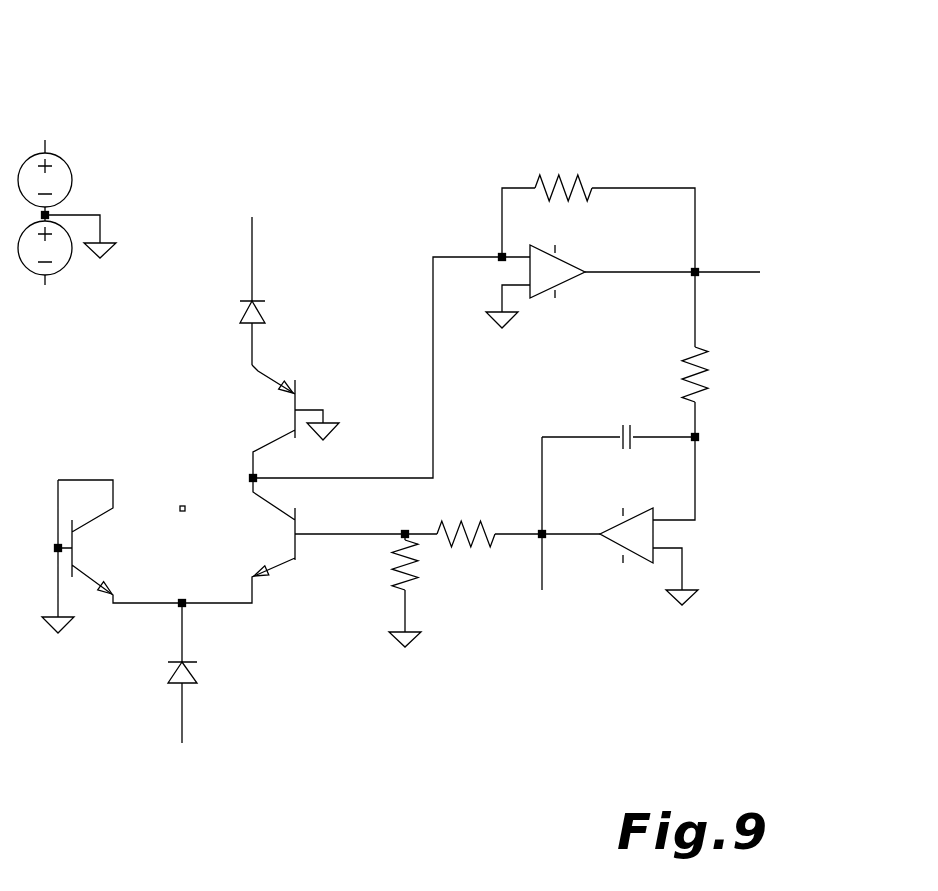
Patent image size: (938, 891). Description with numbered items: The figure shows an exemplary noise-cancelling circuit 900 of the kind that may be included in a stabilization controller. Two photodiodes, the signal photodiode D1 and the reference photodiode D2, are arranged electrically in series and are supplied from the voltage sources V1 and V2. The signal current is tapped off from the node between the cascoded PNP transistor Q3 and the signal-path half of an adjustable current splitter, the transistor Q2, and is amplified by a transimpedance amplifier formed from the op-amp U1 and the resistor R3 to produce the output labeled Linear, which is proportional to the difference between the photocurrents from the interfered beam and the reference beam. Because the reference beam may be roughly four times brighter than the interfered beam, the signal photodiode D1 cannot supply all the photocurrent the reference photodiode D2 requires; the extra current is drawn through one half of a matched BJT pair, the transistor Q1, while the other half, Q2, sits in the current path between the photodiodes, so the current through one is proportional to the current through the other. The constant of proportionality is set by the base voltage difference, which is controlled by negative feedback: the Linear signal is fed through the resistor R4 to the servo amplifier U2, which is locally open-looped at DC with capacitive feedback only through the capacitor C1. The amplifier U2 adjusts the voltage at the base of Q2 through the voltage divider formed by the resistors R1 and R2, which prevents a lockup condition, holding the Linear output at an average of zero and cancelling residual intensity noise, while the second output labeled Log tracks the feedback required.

The noise-cancelling circuit 900 is at (630, 62).
The voltage source V1 is at (66, 232).
The voltage source V2 is at (54, 171).
The signal photodiode D1 is at (281, 291).
The reference photodiode D2 is at (203, 673).
The BJT of matched pair Q1 is at (112, 556).
The BJT of matched pair Q2 is at (293, 540).
The cascoded PNP transistor Q3 is at (267, 421).
The voltage divider resistor R1 is at (473, 535).
The voltage divider resistor R2 is at (391, 590).
The transimpedance feedback resistor R3 is at (598, 212).
The feedback resistor R4 is at (710, 354).
The feedback capacitor C1 is at (618, 468).
The transimpedance amplifier op-amp U1 is at (623, 272).
The servo amplifier U2 is at (620, 521).